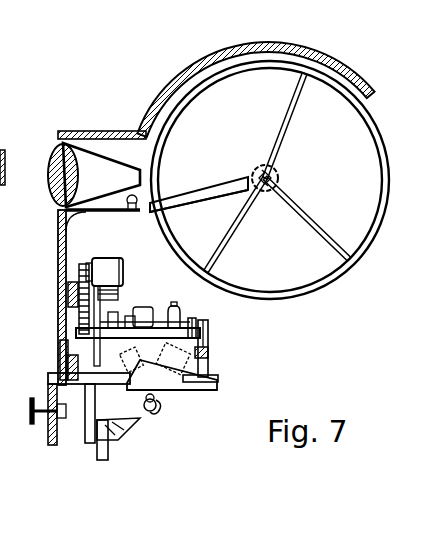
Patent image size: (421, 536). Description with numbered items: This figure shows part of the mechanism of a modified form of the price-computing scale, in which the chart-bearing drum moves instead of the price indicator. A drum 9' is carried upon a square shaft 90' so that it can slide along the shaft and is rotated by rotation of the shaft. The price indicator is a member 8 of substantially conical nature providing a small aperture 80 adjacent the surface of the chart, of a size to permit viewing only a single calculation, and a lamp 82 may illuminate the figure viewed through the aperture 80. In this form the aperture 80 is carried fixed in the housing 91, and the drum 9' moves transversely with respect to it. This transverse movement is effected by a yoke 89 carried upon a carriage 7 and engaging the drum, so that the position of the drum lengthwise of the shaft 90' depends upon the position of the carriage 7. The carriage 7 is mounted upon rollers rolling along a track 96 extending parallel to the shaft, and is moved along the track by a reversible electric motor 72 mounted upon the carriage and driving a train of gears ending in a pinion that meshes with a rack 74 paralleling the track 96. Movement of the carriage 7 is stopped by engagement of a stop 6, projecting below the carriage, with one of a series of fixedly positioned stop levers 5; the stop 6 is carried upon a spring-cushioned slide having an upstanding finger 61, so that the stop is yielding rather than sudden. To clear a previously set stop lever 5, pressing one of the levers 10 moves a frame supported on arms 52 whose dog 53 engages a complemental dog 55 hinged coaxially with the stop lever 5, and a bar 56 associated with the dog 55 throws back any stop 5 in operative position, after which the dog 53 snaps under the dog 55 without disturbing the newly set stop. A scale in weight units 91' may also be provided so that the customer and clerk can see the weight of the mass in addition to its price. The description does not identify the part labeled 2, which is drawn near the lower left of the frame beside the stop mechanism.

The base plate 2 is at (60, 371).
The stop lever 5 is at (177, 377).
The stop 6 is at (177, 343).
The carriage 7 is at (202, 322).
The price indicator member 8 is at (98, 152).
The drum 9' is at (255, 89).
The lever 10 is at (85, 436).
The arm 52 is at (101, 460).
The dog 53 is at (128, 424).
The complemental dog 55 is at (158, 413).
The bar 56 is at (144, 406).
The upstanding finger 61 is at (170, 305).
The electric motor 72 is at (110, 262).
The rack 74 is at (68, 291).
The aperture 80 is at (140, 182).
The lamp 82 is at (160, 212).
The yoke 89 is at (238, 241).
The square shaft 90' is at (292, 166).
The housing 91 is at (50, 297).
The scale in weight units 91' is at (18, 131).
The track 96 is at (207, 355).